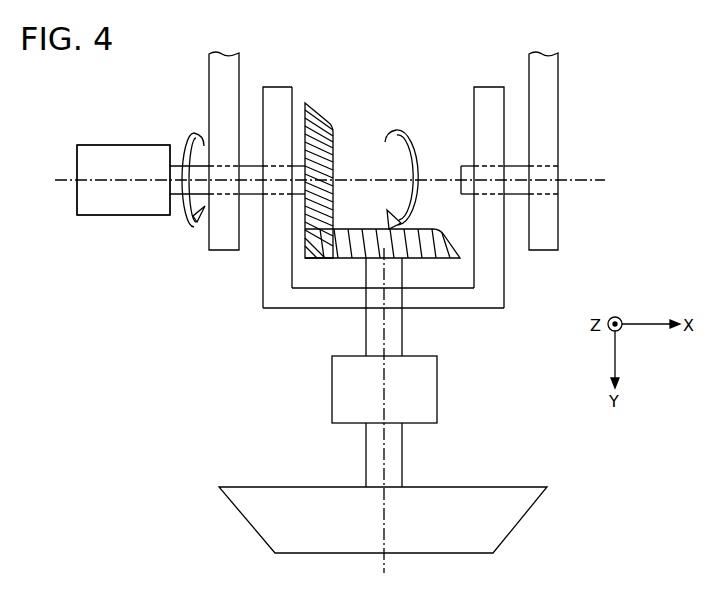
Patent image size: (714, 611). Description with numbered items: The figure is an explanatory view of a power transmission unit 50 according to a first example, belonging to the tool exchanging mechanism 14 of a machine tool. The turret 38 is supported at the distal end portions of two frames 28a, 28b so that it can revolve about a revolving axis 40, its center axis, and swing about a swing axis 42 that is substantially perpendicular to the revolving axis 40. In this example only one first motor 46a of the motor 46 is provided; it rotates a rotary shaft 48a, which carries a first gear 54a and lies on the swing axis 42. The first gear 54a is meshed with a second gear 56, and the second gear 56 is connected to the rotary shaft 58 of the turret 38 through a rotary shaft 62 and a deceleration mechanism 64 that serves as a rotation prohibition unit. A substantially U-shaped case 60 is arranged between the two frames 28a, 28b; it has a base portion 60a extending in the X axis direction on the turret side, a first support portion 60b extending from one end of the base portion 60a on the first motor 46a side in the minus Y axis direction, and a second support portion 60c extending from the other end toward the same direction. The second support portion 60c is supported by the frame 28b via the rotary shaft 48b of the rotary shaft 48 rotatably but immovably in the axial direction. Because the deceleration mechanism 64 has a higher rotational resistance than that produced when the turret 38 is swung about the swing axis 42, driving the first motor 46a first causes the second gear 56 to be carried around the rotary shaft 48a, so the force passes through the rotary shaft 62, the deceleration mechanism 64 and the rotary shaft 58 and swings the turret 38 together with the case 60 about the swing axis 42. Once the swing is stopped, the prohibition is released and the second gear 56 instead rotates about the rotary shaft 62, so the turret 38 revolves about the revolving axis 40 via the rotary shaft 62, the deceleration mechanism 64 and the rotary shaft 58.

The tool exchanging mechanism 14 is at (117, 244).
The frame 28a is at (208, 73).
The frame 28b is at (559, 72).
The turret 38 is at (474, 497).
The revolving axis 40 is at (388, 521).
The swing axis 42 is at (585, 178).
The motor 46 is at (123, 160).
The first motor 46a is at (100, 145).
The rotary shaft 48 is at (249, 120).
The rotary shaft 48a is at (281, 166).
The rotary shaft 48b is at (517, 195).
The power transmission unit 50 is at (384, 128).
The first gear 54a is at (313, 112).
The second gear 56 is at (360, 229).
The rotary shaft 58 is at (370, 447).
The case 60 is at (385, 228).
The base portion 60a is at (455, 300).
The first support portion 60b is at (265, 263).
The second support portion 60c is at (496, 268).
The rotary shaft 62 is at (396, 343).
The deceleration mechanism 64 is at (437, 399).